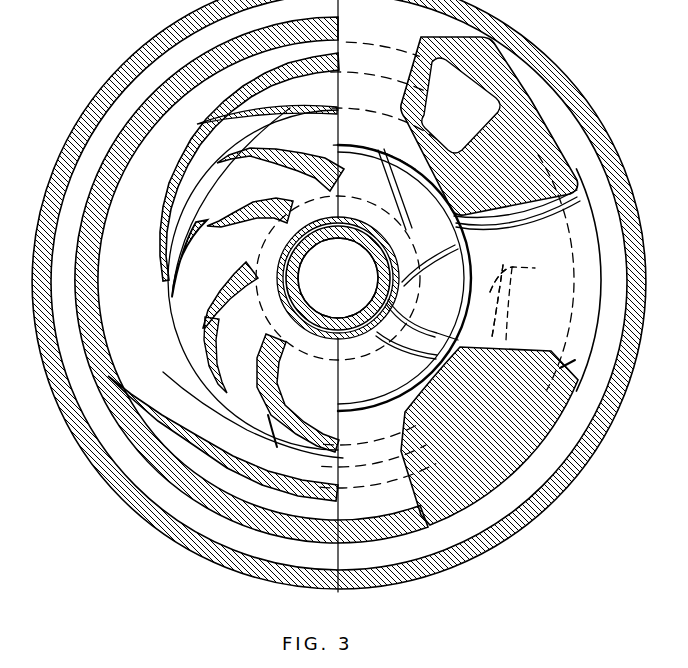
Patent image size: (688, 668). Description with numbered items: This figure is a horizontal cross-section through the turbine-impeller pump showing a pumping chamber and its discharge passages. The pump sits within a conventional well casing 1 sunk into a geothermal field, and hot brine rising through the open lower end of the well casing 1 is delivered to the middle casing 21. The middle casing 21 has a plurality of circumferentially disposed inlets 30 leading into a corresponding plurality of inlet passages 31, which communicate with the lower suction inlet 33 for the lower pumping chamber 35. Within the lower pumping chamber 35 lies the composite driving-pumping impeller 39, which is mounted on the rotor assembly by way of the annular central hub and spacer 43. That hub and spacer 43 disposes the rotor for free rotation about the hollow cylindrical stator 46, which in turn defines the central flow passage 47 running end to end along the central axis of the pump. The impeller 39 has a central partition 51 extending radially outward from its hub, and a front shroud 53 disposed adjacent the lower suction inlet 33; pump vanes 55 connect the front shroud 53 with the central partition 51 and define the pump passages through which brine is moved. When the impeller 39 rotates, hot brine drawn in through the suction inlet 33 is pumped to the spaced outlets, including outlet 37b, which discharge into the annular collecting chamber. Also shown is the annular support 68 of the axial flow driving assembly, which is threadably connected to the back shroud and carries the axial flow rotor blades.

The well casing 1 is at (621, 163).
The middle casing 21 is at (554, 421).
The inlet 30 is at (570, 363).
The inlet passage 31 is at (527, 343).
The lower suction inlet 33 is at (461, 217).
The lower pumping chamber 35 is at (187, 420).
The outlet 37b is at (487, 93).
The composite driving-pumping impeller 39 is at (280, 133).
The annular central hub and spacer 43 is at (397, 317).
The hollow cylindrical stator 46 is at (316, 245).
The central flow passage 47 is at (350, 301).
The central partition 51 is at (305, 112).
The front shroud 53 is at (515, 268).
The pump vane 55 is at (303, 157).
The annular support 68 is at (233, 115).